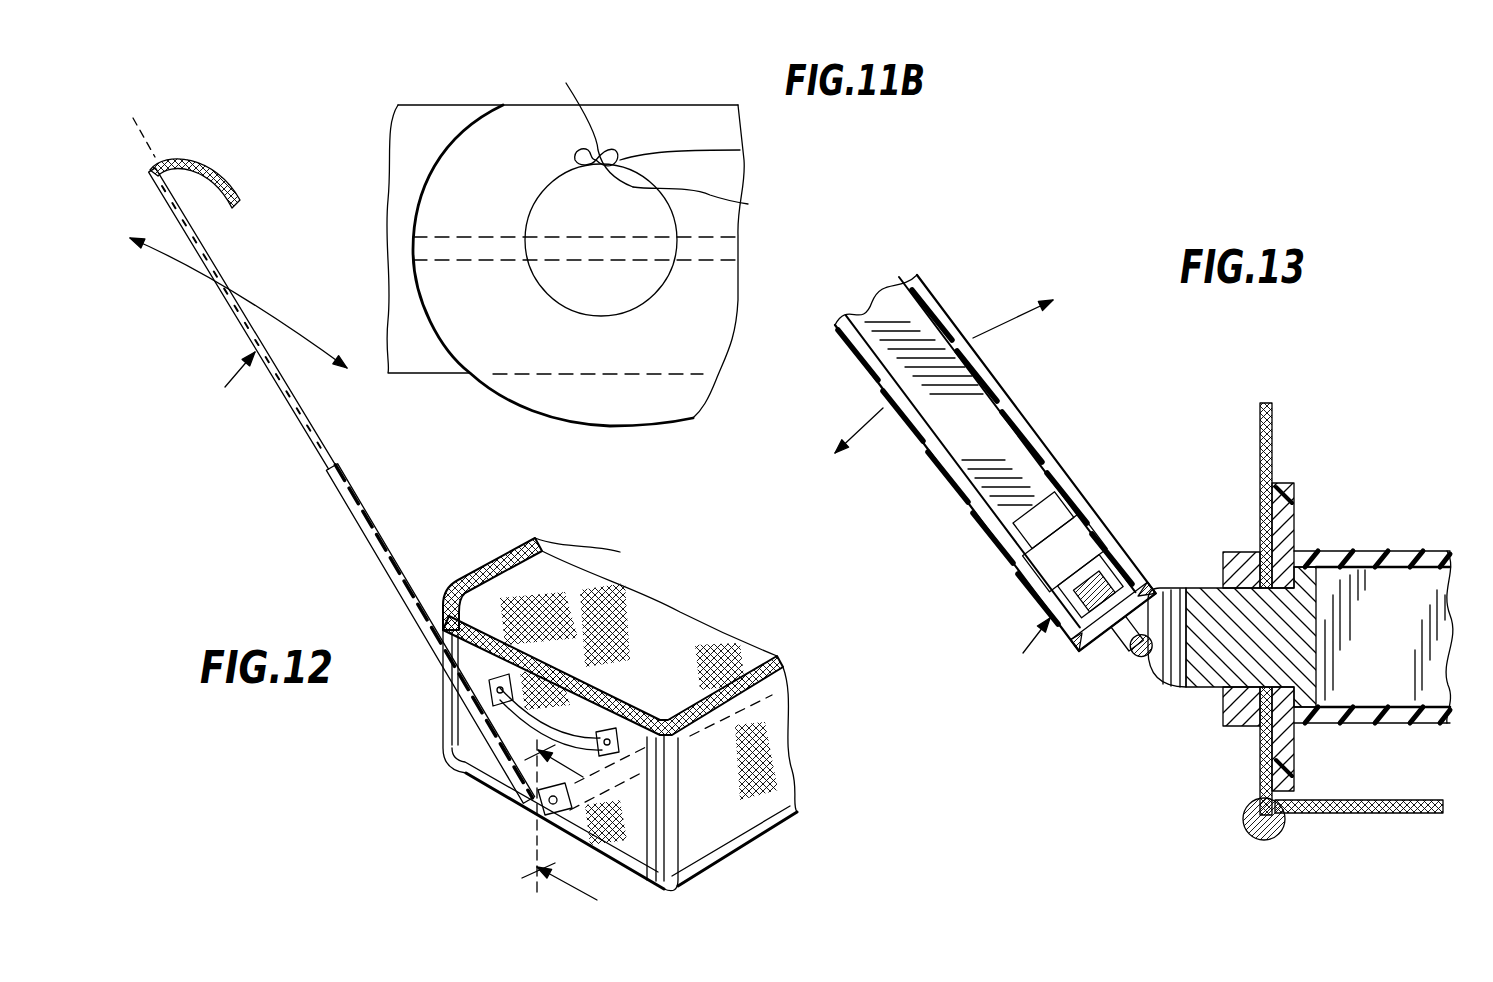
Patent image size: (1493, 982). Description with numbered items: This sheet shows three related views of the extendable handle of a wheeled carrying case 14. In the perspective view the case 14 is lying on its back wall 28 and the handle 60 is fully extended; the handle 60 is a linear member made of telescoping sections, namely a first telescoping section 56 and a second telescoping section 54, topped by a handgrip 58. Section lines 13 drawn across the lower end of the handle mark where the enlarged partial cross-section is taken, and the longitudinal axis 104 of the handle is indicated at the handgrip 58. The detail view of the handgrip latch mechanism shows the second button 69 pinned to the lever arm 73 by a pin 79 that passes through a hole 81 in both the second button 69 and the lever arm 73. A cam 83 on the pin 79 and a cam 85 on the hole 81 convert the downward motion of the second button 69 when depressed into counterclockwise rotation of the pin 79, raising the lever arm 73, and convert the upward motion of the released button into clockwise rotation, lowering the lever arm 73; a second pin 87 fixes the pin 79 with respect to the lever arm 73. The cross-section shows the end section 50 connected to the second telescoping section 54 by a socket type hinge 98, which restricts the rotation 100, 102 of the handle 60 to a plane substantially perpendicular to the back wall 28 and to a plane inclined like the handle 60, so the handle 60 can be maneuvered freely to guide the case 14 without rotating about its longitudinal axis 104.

In FIG. 12, the section lines 13 is at (647, 810).
In FIG. 12, the carrying case 14 is at (657, 670).
In FIG. 12, the back wall 28 is at (752, 843).
In FIG. 13, the back wall 28 is at (1365, 813).
In FIG. 13, the end section 50 is at (1193, 588).
In FIG. 12, the second telescoping section 54 is at (365, 547).
In FIG. 13, the second telescoping section 54 is at (1023, 413).
In FIG. 12, the first telescoping section 56 is at (305, 404).
In FIG. 12, the handgrip 58 is at (228, 180).
In FIG. 12, the handle 60 is at (222, 385).
In FIG. 11B, the second button 69 is at (618, 104).
In FIG. 11B, the lever arm 73 is at (413, 207).
In FIG. 11B, the pin 79 is at (740, 150).
In FIG. 11B, the hole 81 is at (615, 158).
In FIG. 11B, the cam 83 is at (705, 206).
In FIG. 11B, the cam 85 is at (577, 160).
In FIG. 11B, the second pin 87 is at (717, 264).
In FIG. 13, the socket type hinge 98 is at (1019, 655).
In FIG. 13, the rotation 100 is at (975, 338).
In FIG. 12, the rotation 102 is at (262, 305).
In FIG. 12, the longitudinal axis 104 is at (145, 128).